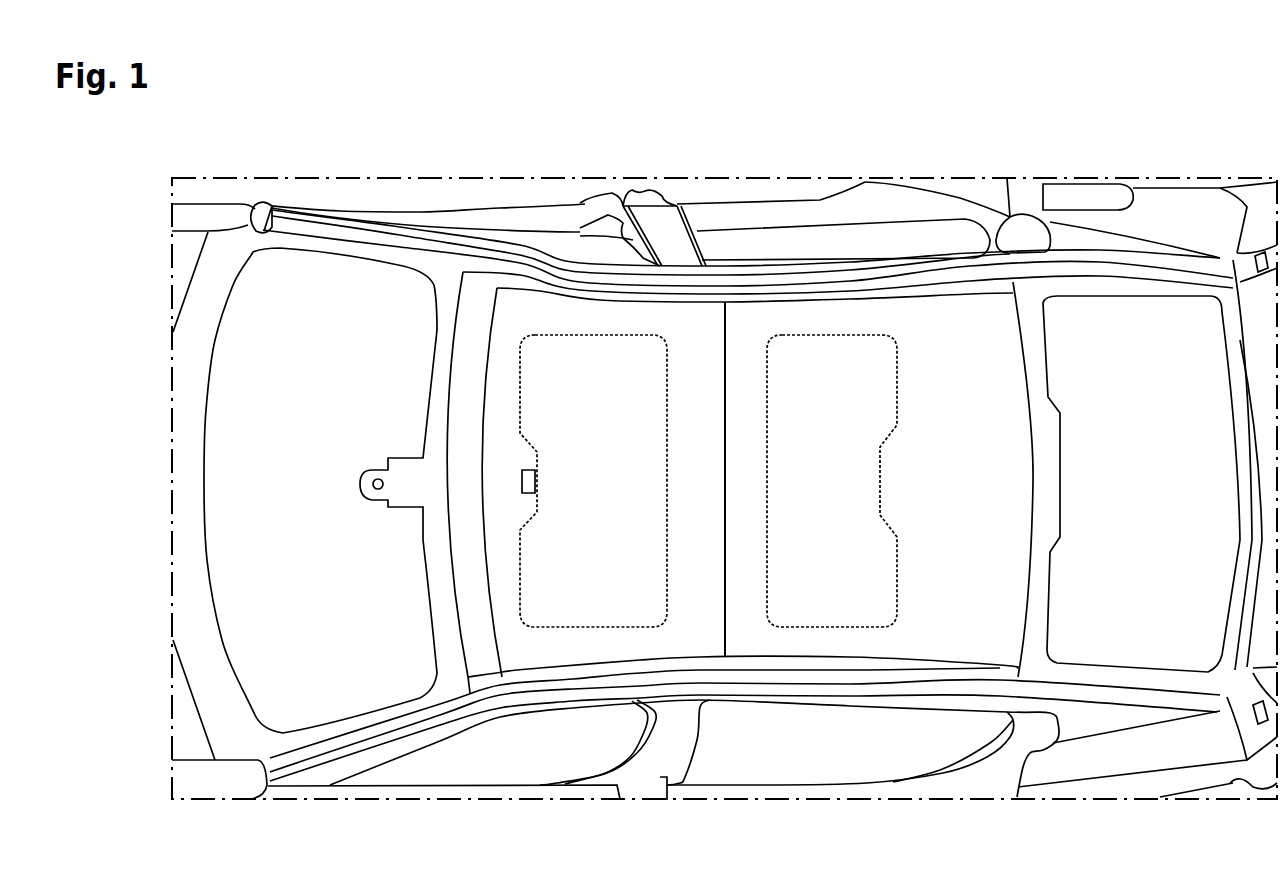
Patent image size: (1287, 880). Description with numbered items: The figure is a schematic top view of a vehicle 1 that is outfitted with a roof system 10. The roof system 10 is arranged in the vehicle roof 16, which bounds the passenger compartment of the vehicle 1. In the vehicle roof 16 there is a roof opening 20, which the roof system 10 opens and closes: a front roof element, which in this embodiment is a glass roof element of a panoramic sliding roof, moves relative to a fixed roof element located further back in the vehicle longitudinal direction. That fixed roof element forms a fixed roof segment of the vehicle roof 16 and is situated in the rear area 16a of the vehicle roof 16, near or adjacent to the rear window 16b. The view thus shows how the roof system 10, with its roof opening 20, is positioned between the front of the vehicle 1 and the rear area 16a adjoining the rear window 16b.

The vehicle 1 is at (191, 139).
The roof system 10 is at (1003, 160).
The roof opening 20 is at (583, 298).
The vehicle roof 16 is at (833, 727).
The rear area of the vehicle roof 16a is at (1016, 498).
The rear window 16b is at (1176, 498).